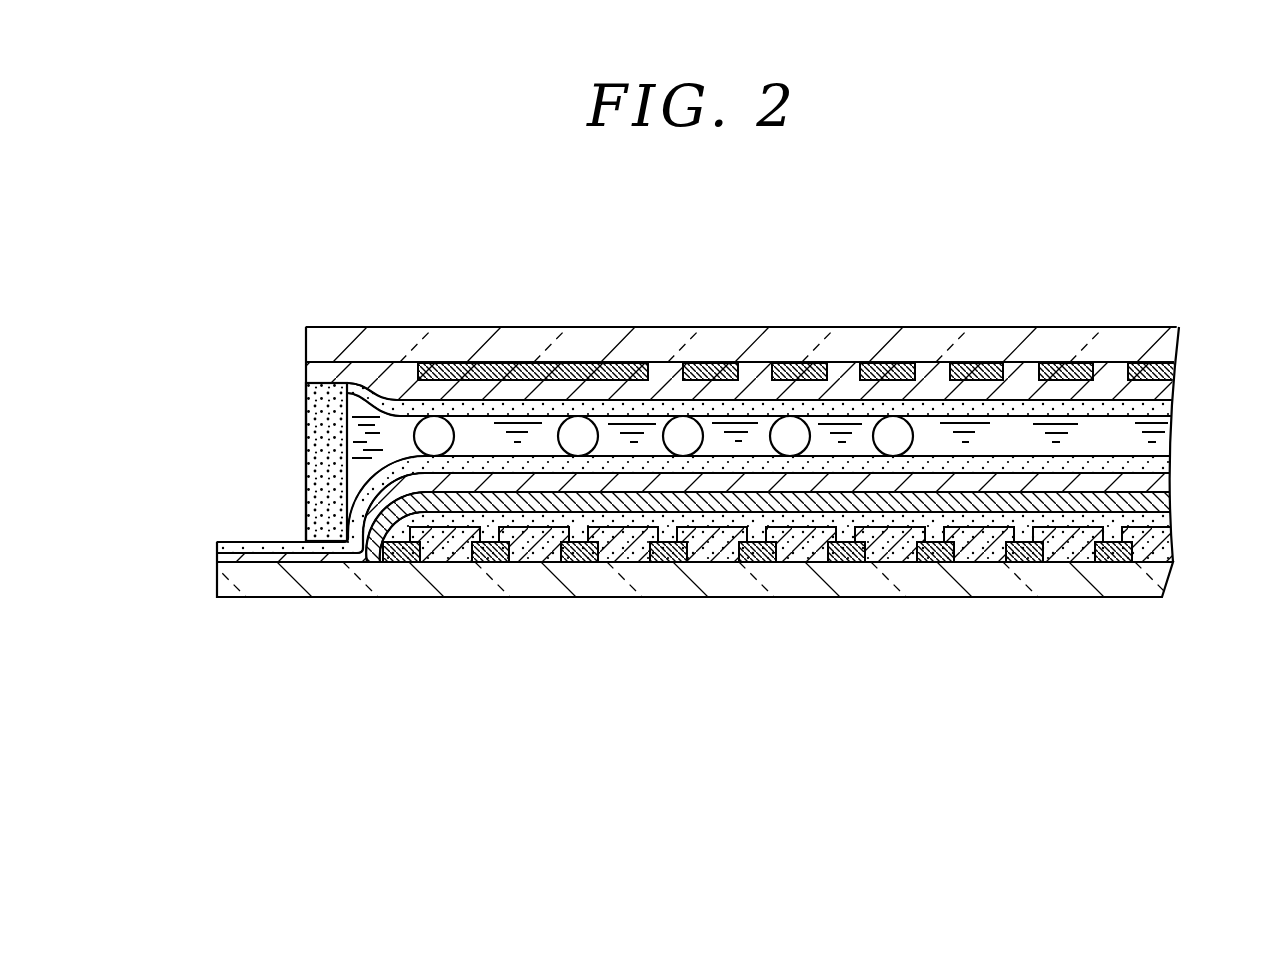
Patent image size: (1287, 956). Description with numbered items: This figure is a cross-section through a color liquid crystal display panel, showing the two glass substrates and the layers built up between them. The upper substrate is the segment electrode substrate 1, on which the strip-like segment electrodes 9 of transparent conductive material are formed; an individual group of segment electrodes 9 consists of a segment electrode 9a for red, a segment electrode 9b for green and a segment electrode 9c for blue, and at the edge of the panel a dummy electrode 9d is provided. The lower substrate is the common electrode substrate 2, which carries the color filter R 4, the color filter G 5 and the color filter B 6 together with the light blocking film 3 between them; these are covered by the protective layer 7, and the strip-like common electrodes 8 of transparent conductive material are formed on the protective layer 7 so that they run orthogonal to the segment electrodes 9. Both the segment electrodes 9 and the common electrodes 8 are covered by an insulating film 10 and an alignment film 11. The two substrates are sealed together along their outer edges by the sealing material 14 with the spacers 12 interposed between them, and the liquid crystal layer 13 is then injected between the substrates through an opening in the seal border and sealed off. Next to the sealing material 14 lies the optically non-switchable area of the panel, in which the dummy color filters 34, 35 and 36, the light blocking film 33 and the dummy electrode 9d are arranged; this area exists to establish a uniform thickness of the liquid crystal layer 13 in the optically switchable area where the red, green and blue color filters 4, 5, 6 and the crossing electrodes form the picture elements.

The segment electrode substrate 1 is at (1170, 342).
The common electrode substrate 2 is at (1173, 573).
The light blocking film 3 is at (662, 560).
The color filter R (red) 4 is at (717, 553).
The color filter G (green) 5 is at (797, 548).
The color filter B (blue) 6 is at (890, 552).
The protective layer 7 is at (1163, 518).
The common electrodes 8 is at (1162, 503).
The segment electrodes 9 is at (834, 291).
The segment electrode for red 9a is at (715, 362).
The segment electrode for green 9b is at (793, 362).
The segment electrode for blue 9c is at (1024, 321).
The dummy electrode 9d is at (586, 363).
The insulating film 10 is at (1173, 390).
The alignment film 11 is at (1163, 465).
The spacers 12 is at (907, 430).
The liquid crystal layer 13 is at (1012, 428).
The sealing material 14 is at (307, 470).
The light blocking film 33 is at (393, 562).
The dummy color filter 34 is at (440, 557).
The dummy color filter 35 is at (522, 552).
The dummy color filter 36 is at (618, 553).